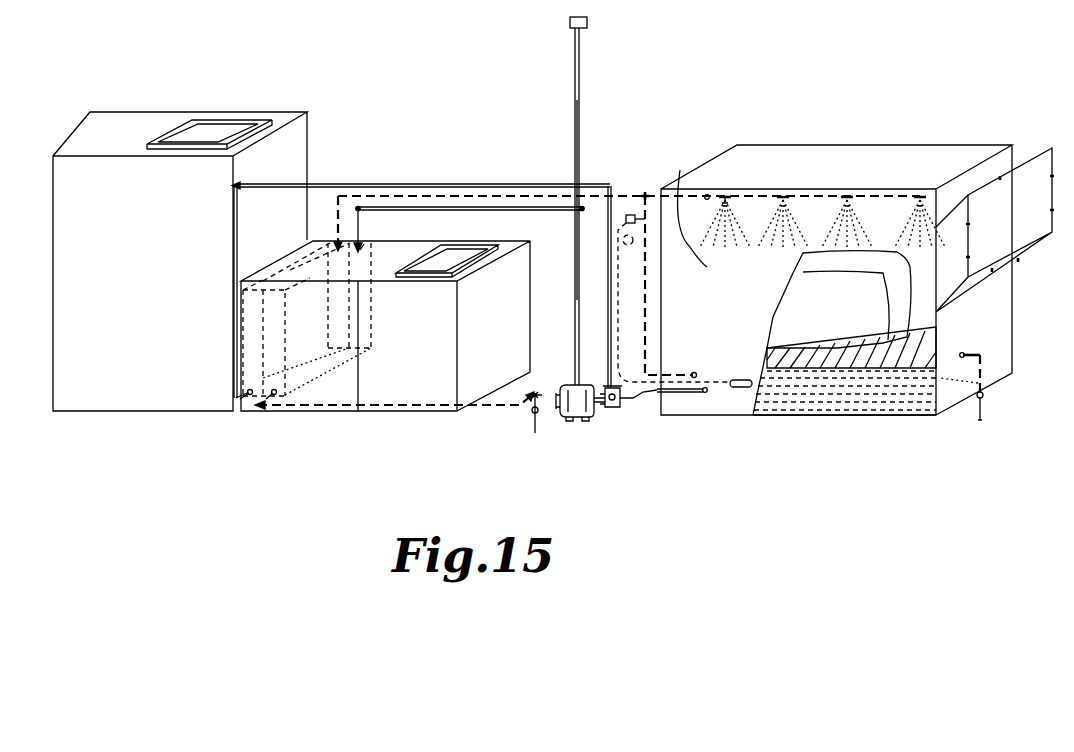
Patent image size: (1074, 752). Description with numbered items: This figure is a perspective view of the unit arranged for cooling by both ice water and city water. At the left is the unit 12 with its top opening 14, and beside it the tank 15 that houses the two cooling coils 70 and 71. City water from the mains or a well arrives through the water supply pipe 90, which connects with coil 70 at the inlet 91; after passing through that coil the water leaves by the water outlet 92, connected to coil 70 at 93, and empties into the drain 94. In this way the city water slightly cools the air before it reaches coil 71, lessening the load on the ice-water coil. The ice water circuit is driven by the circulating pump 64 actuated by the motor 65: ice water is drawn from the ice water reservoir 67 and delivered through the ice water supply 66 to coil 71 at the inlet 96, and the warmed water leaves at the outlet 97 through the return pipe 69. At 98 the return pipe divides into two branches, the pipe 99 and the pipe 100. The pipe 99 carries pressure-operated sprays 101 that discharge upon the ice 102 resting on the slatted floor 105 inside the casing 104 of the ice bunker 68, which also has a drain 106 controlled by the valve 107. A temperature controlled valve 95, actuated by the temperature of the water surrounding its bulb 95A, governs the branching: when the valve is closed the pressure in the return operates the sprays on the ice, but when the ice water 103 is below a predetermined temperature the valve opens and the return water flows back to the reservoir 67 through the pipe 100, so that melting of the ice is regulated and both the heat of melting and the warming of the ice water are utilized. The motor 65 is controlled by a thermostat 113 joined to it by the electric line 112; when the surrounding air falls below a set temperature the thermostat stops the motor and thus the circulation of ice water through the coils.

The cabinet housing 12 is at (108, 122).
The top opening 14 is at (200, 133).
The tank 15 is at (450, 257).
The circulating pump 64 is at (614, 408).
The motor 65 is at (578, 418).
The ice water supply 66 is at (492, 183).
The ice water reservoir 67 is at (877, 400).
The ice bunker 68 is at (680, 220).
The return pipe 69 is at (582, 200).
The coil 70 is at (265, 343).
The coil 71 is at (276, 337).
The water supply pipe 90 is at (572, 209).
The inlet connection 91 is at (365, 248).
The water outlet 92 is at (400, 406).
The outlet connection 93 is at (273, 394).
The drain 94 is at (530, 410).
The temperature controlled valve 95 is at (630, 214).
The bulb 95A is at (740, 388).
The inlet 96 is at (248, 394).
The outlet 97 is at (338, 248).
The branch point 98 is at (645, 194).
The spray pipe 99 is at (768, 196).
The return branch pipe 100 is at (647, 312).
The sprays 101 is at (725, 196).
The ice 102 is at (893, 318).
The ice water 103 is at (903, 397).
The casing 104 is at (937, 145).
The slatted floor 105 is at (835, 370).
The drain 106 is at (983, 375).
The valve 107 is at (983, 395).
The electric line 112 is at (578, 92).
The thermostat 113 is at (590, 23).